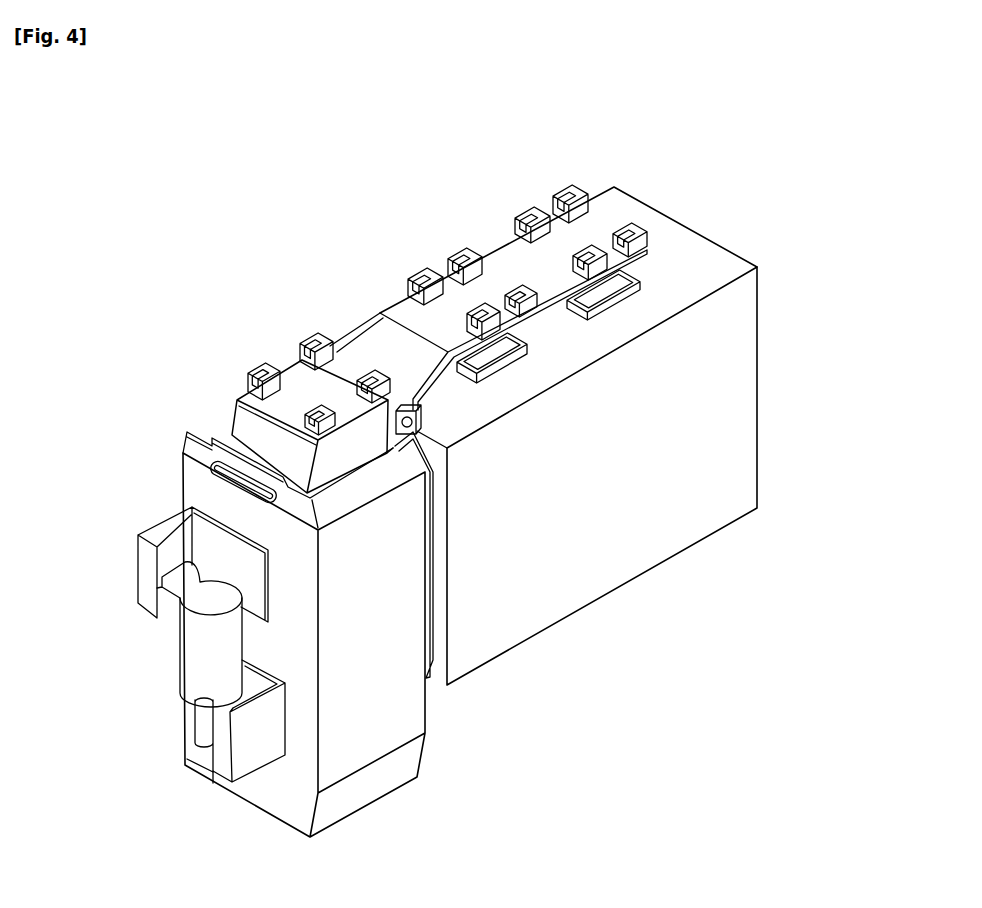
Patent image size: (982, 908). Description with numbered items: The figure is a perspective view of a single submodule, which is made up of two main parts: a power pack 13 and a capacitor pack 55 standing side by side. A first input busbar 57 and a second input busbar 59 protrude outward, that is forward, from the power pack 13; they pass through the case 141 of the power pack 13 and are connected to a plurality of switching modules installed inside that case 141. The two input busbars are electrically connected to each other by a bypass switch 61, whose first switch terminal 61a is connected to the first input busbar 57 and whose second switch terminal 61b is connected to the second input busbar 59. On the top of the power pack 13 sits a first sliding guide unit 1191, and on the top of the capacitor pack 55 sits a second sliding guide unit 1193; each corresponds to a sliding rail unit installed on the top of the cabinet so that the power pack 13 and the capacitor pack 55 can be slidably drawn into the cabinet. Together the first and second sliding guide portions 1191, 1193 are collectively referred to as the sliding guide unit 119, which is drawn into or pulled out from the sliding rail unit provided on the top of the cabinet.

The power pack 13 is at (388, 815).
The capacitor pack 55 is at (776, 507).
The first input busbar 57 is at (120, 573).
The second input busbar 59 is at (192, 756).
The bypass switch 61 is at (150, 657).
The first switch terminal 61a is at (157, 590).
The second switch terminal 61b is at (217, 702).
The sliding guide unit 119 is at (268, 139).
The first sliding guide unit 1191 is at (281, 350).
The second sliding guide unit 1193 is at (480, 243).
The case 141 is at (403, 717).